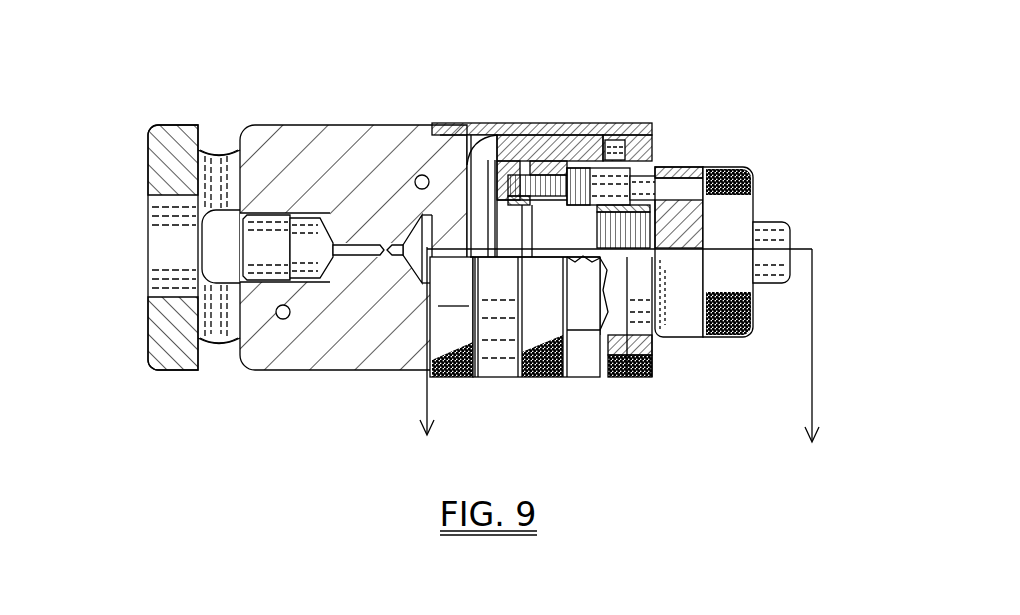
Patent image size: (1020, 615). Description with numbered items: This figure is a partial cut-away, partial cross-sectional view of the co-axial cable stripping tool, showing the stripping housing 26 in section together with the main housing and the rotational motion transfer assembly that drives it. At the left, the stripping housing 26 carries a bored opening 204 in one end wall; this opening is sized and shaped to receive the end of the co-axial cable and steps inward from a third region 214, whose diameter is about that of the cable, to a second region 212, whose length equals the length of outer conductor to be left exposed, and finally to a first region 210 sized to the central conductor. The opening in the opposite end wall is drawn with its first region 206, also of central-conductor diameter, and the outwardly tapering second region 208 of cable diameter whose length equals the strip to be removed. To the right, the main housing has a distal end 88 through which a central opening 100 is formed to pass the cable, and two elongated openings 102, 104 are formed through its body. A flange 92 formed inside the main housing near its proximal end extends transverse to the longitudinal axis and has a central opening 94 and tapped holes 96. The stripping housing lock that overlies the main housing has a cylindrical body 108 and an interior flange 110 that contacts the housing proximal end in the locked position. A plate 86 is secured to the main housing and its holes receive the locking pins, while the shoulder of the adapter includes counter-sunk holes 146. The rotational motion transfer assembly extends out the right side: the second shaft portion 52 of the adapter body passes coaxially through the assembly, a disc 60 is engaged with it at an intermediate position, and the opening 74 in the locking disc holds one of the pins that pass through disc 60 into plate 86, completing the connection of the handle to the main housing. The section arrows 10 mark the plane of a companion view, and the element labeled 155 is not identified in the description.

The section line 10- 10 is at (619, 365).
The stripping housing 26 is at (307, 387).
The second shaft portion 52 is at (765, 243).
The disc 60 is at (673, 325).
The opening 74 is at (743, 207).
The plate 86 is at (552, 133).
The distal end 88 is at (147, 340).
The flange 92 is at (503, 150).
The central opening 94 is at (503, 252).
The tapped holes 96 is at (520, 177).
The central opening 100 is at (142, 228).
The elongated opening 102 is at (220, 352).
The elongated opening 104 is at (222, 138).
The cylindrical body 108 is at (451, 317).
The flange 110 is at (598, 130).
The counter-sunk hole 146 is at (540, 227).
The threaded member 155 is at (655, 135).
The bored opening 204 is at (237, 248).
The first region 206 is at (408, 238).
The second region 208 is at (452, 126).
The first region 210 is at (372, 240).
The second region 212 is at (312, 240).
The third region 214 is at (285, 233).